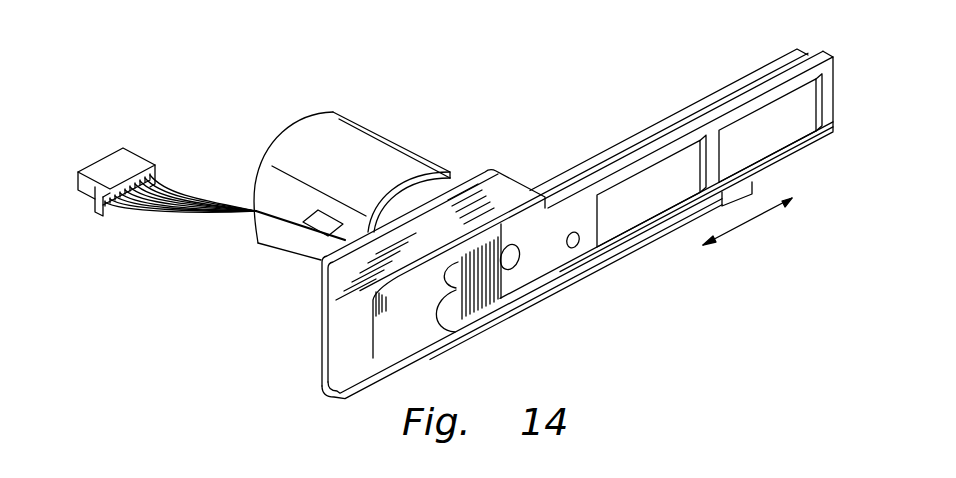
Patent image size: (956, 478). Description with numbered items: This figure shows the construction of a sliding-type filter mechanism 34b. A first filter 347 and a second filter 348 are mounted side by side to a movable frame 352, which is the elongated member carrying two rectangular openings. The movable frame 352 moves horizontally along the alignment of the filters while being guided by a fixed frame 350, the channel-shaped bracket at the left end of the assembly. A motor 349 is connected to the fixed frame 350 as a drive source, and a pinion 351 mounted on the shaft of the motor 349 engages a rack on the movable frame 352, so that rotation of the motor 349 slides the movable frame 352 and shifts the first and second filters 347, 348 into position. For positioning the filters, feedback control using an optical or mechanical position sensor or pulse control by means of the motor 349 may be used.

The motor 349 is at (311, 128).
The fixed frame 350 is at (334, 328).
The pinion 351 is at (441, 312).
The movable frame 352 is at (753, 93).
The first filter 347 is at (612, 221).
The second filter 348 is at (772, 138).
The filter mechanism 34b is at (657, 332).